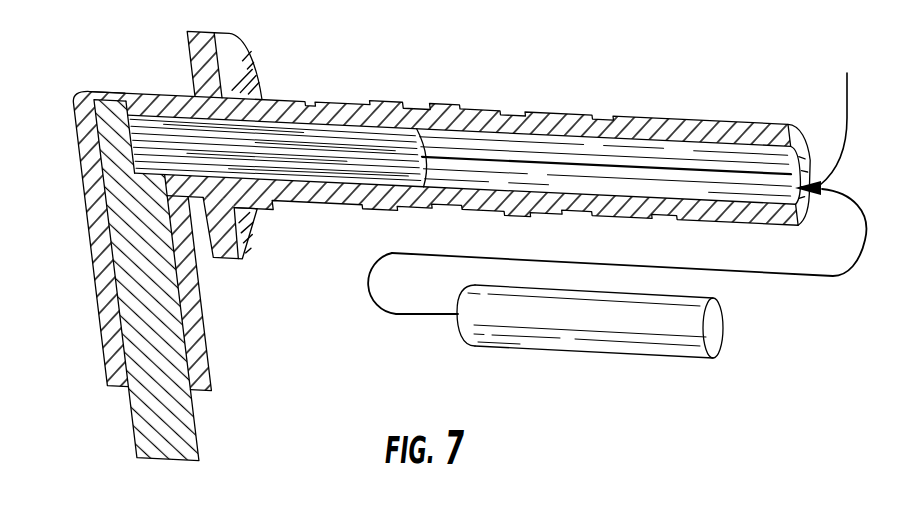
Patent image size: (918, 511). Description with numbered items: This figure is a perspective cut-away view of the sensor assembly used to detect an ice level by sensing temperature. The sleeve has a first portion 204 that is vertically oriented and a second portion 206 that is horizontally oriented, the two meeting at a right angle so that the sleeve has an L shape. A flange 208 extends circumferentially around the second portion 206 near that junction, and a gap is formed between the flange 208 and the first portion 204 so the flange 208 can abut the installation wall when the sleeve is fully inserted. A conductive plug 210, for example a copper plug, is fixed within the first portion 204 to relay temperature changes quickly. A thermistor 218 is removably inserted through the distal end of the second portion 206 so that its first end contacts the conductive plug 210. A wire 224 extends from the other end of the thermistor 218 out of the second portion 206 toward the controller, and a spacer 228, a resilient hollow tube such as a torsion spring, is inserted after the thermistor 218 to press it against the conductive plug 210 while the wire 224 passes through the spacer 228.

The first portion 204 is at (100, 250).
The second portion 206 is at (452, 122).
The flange 208 is at (228, 256).
The conductive plug 210 is at (145, 408).
The thermistor 218 is at (313, 182).
The wire 224 is at (847, 106).
The spacer 228 is at (560, 348).